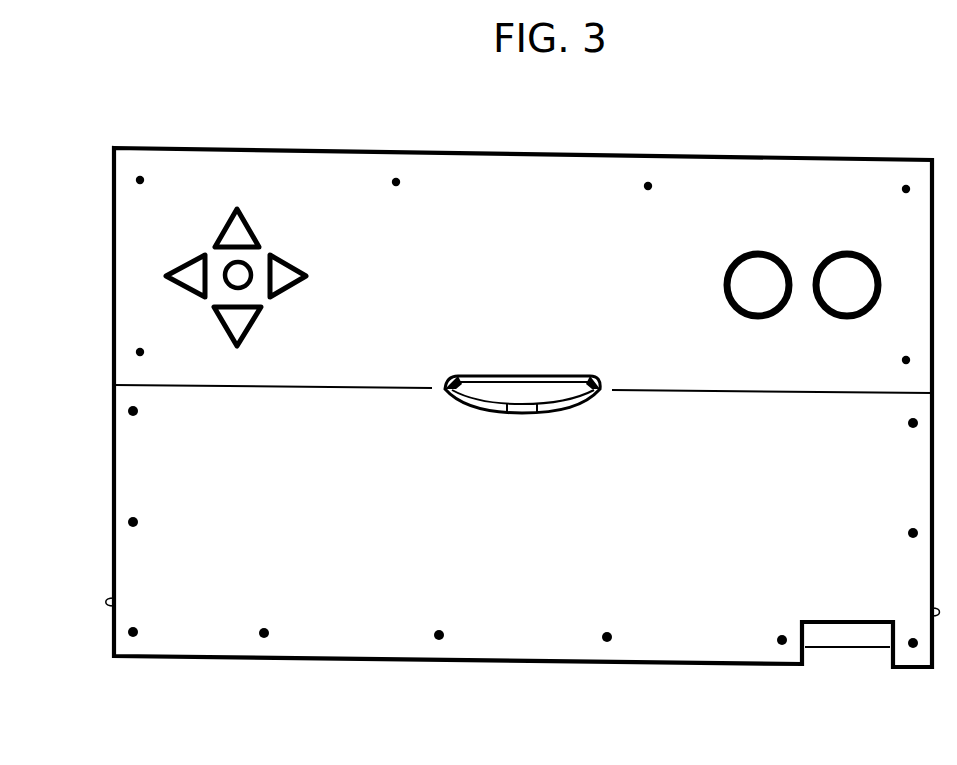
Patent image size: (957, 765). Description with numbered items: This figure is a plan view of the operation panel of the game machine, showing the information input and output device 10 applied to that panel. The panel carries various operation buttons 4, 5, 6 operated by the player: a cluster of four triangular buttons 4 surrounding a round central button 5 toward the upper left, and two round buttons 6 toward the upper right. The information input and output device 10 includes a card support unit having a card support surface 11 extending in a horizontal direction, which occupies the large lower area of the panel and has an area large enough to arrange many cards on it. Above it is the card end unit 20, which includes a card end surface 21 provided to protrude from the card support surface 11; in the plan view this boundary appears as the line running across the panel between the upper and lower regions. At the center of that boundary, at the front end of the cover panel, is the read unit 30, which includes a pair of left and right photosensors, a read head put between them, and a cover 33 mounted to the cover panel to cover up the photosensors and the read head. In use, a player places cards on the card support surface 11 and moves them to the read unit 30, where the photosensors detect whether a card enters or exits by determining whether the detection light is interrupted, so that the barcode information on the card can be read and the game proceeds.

The information input and output device 10 is at (345, 615).
The card support surface 11 is at (696, 541).
The card end unit 20 is at (497, 203).
The card end surface 21 is at (745, 393).
The operation button 4 is at (240, 231).
The operation button 5 is at (240, 275).
The operation button 6 is at (858, 280).
The read unit 30 is at (473, 410).
The cover 33 is at (525, 392).